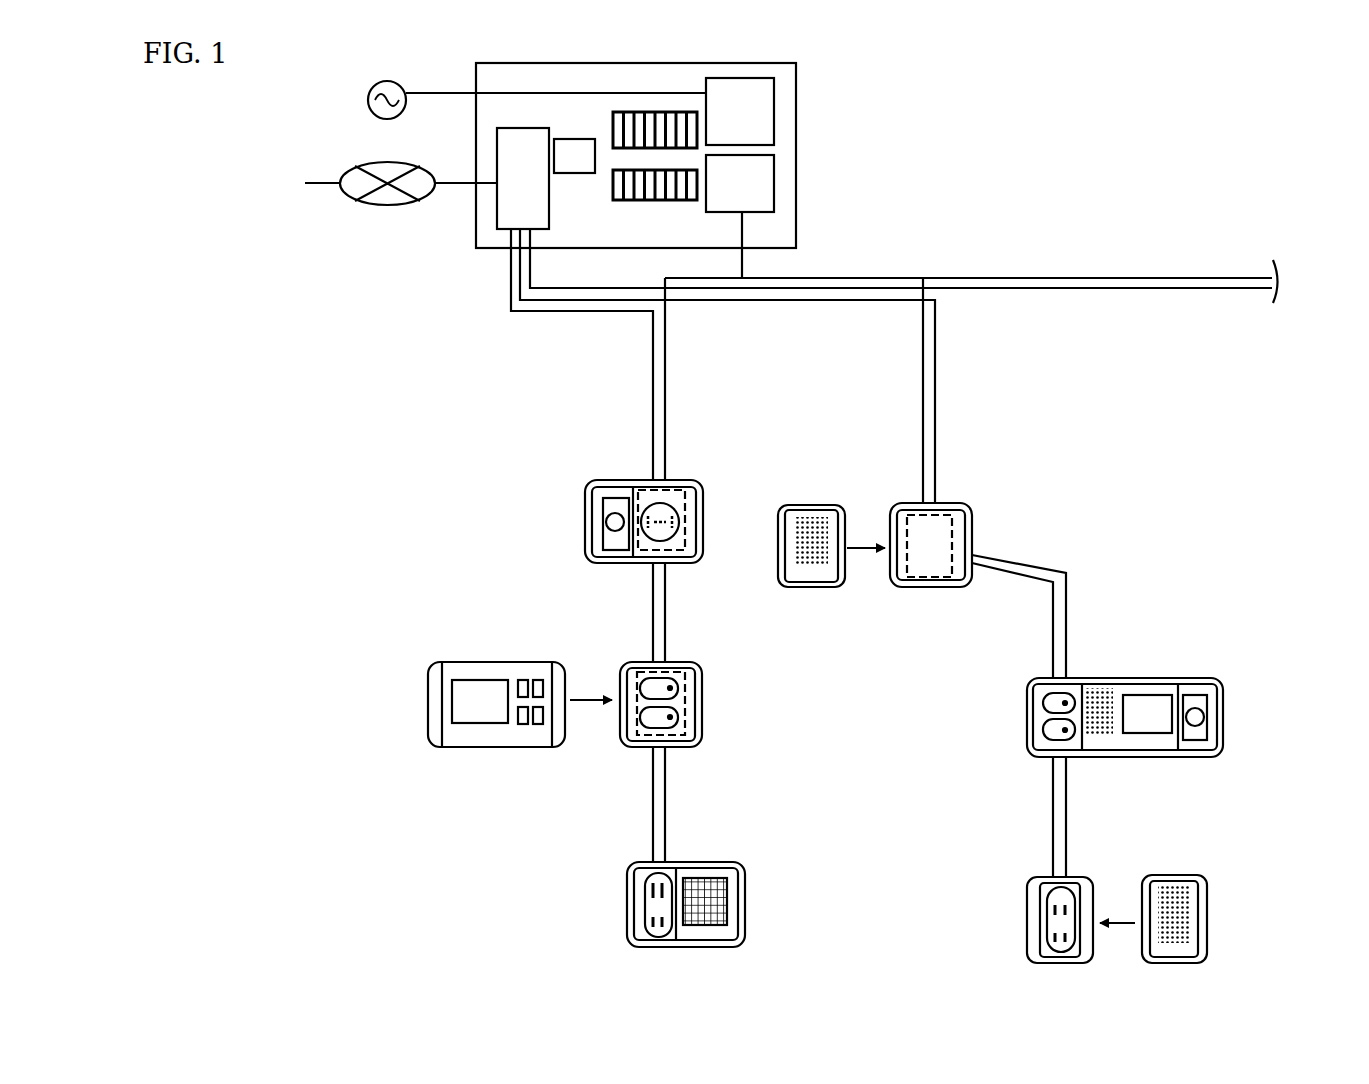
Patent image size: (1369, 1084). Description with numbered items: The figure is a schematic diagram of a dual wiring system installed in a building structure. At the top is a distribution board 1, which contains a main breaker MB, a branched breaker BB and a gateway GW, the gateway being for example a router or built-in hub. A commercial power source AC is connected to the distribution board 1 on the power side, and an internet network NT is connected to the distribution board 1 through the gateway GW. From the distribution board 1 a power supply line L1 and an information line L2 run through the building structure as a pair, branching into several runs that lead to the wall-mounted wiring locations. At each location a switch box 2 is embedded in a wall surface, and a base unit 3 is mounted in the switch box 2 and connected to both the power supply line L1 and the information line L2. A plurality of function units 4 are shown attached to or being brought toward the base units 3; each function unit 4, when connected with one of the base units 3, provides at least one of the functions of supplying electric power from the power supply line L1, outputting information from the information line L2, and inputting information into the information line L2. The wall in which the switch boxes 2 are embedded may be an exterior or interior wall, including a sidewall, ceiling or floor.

The distribution board 1 is at (668, 155).
The switch box 2 is at (682, 690).
The base unit 3 is at (695, 560).
The function unit 4 is at (612, 480).
The power supply line L1 is at (668, 395).
The information line L2 is at (655, 430).
The commercial power source AC is at (515, 99).
The internet network NT is at (375, 205).
The gateway GW is at (523, 178).
The main breaker MB is at (740, 111).
The branched breaker BB is at (740, 183).